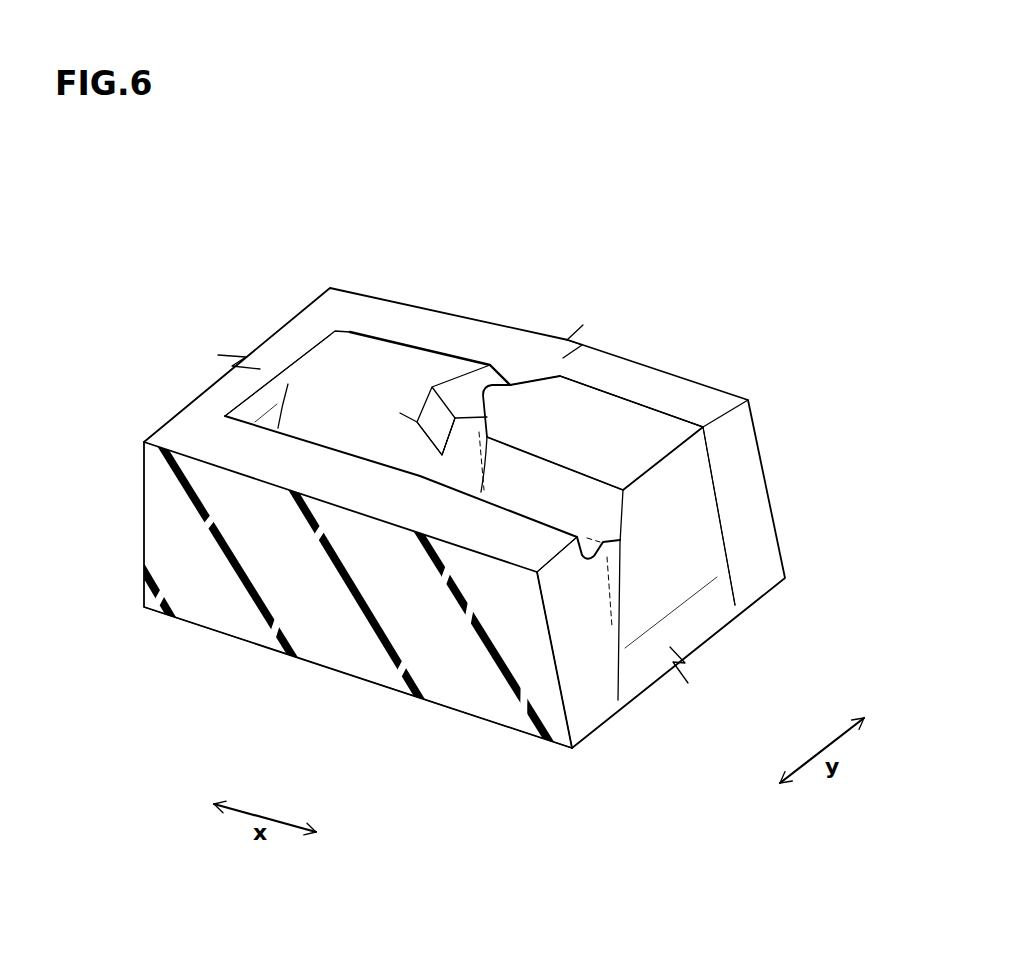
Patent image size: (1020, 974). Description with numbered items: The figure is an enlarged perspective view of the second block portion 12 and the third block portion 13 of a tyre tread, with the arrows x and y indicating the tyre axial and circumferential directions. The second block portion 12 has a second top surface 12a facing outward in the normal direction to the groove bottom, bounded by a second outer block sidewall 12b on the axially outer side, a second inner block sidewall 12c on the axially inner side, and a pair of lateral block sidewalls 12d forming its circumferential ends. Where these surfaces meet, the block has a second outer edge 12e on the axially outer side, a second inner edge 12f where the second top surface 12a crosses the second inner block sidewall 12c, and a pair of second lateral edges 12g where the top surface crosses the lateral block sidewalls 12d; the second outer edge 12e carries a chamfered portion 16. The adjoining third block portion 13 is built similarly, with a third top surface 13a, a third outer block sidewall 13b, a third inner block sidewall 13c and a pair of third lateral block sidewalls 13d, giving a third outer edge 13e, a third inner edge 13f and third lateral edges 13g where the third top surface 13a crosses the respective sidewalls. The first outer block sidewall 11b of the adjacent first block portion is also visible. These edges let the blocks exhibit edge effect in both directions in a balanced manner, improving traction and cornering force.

The first outer block sidewall 11b is at (740, 488).
The second block portion 12 is at (327, 345).
The second top surface 12a is at (378, 363).
The second outer block sidewall 12b is at (447, 457).
The second inner block sidewall 12c is at (283, 389).
The lateral block sidewalls 12d is at (343, 418).
The second outer edge 12e is at (460, 373).
The second inner edge 12f is at (328, 345).
The second lateral edges 12g is at (330, 392).
The third block portion 13 is at (588, 408).
The third top surface 13a is at (653, 433).
The third outer block sidewall 13b is at (660, 515).
The third inner block sidewall 13c is at (438, 434).
The third lateral block sidewalls 13d is at (582, 500).
The third outer edge 13e is at (676, 448).
The third inner edge 13f is at (530, 377).
The third lateral edges 13g is at (627, 393).
The chamfered portion 16 is at (480, 380).